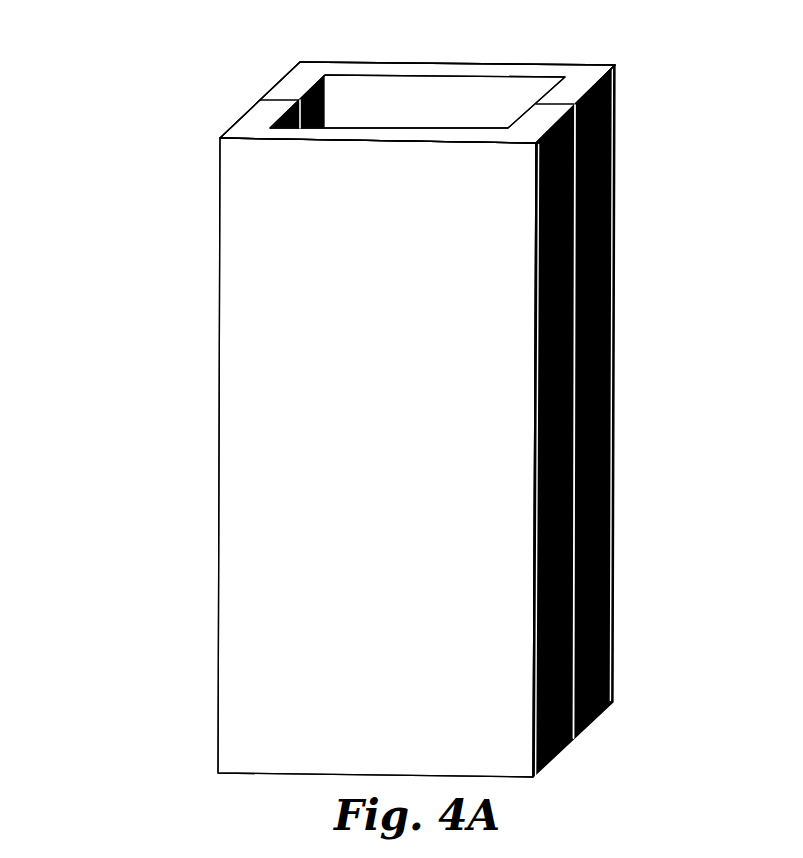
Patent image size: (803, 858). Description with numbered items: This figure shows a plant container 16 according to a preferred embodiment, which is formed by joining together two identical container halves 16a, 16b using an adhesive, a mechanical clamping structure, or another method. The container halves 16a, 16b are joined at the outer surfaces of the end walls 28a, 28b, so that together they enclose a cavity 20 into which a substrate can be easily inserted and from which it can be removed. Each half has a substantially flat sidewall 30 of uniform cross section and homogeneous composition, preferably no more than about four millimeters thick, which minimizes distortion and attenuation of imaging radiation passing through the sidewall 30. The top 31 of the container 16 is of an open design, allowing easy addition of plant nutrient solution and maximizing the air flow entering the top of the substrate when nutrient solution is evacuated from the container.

The container 16 is at (158, 360).
The container half 16a is at (636, 48).
The container half 16b is at (522, 431).
The cavity 20 is at (412, 94).
The end wall 28a is at (288, 88).
The end wall 28b is at (558, 145).
The sidewall 30 is at (432, 283).
The top 31 is at (498, 70).